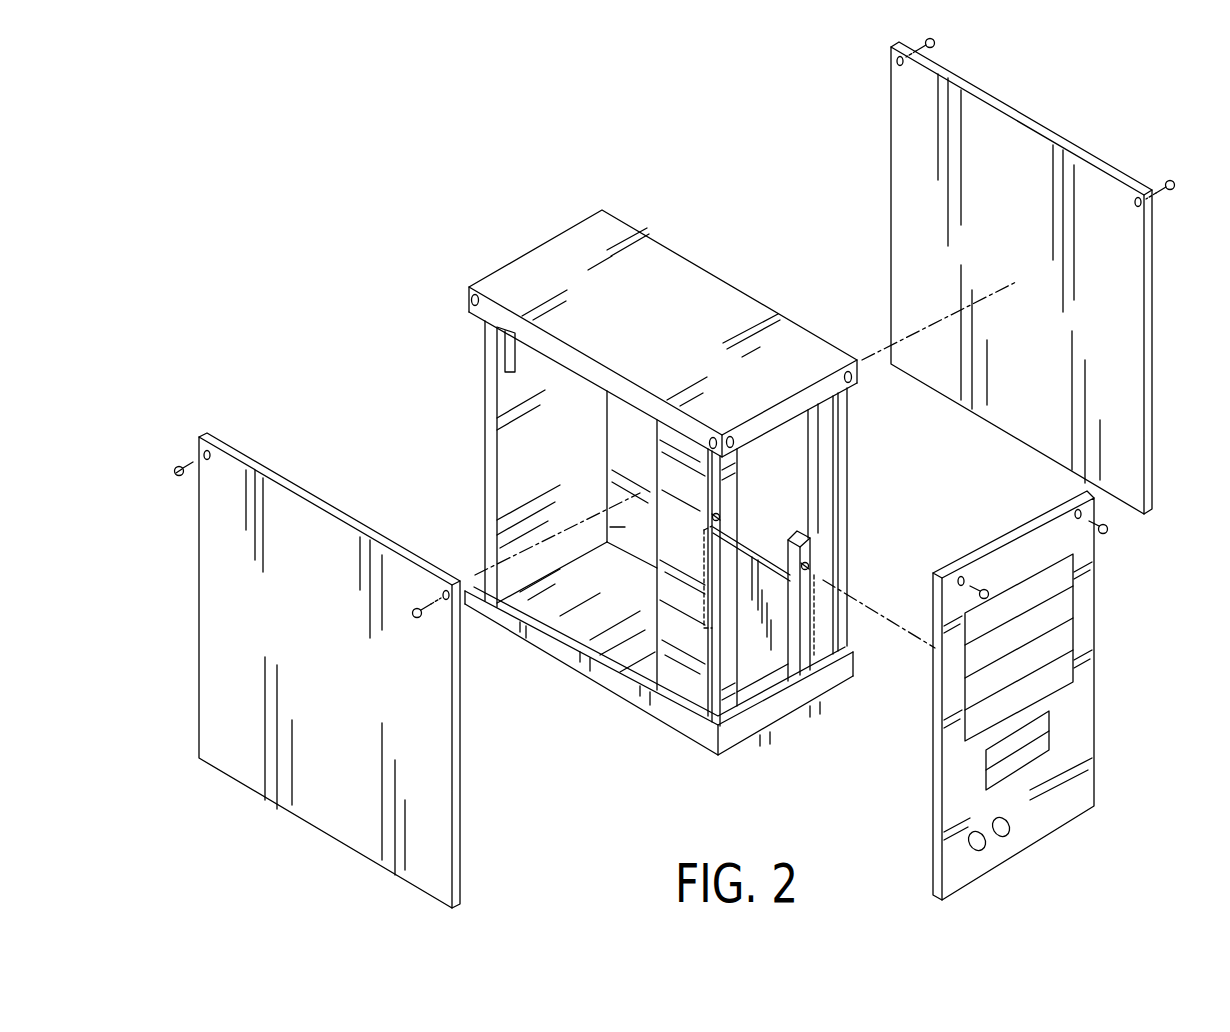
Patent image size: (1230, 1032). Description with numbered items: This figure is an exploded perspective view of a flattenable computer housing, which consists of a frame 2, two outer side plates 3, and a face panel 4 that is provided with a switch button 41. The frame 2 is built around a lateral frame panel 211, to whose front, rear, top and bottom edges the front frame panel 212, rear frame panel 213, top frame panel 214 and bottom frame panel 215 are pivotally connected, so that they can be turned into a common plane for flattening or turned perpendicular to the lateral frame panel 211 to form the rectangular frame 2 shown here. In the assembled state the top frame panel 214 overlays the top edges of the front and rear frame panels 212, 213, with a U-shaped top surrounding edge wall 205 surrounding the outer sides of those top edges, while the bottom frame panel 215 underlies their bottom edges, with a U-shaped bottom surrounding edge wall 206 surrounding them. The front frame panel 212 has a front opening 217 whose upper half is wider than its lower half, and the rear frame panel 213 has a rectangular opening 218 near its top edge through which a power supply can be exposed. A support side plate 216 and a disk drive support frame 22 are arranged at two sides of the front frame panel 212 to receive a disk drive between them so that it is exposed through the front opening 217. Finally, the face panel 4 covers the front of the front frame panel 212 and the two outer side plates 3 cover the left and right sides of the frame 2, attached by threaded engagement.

The frame 2 is at (688, 221).
The outer side plate 3 is at (421, 737).
The face panel 4 is at (1059, 697).
The switch button 41 is at (1005, 836).
The disk drive support frame 22 is at (775, 618).
The top surrounding edge wall 205 is at (500, 315).
The bottom surrounding edge wall 206 is at (562, 650).
The lateral frame panel 211 is at (620, 490).
The front frame panel 212 is at (822, 548).
The rear frame panel 213 is at (513, 455).
The top frame panel 214 is at (710, 293).
The bottom frame panel 215 is at (632, 655).
The support side plate 216 is at (683, 680).
The front opening 217 is at (750, 685).
The rectangular opening 218 is at (514, 345).